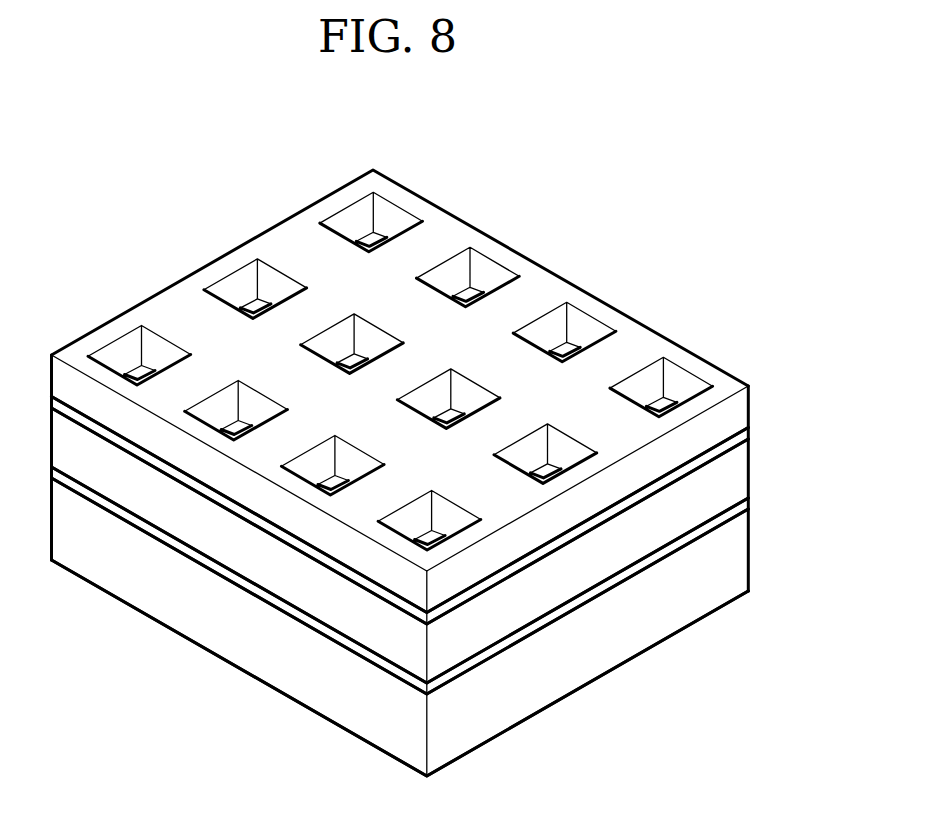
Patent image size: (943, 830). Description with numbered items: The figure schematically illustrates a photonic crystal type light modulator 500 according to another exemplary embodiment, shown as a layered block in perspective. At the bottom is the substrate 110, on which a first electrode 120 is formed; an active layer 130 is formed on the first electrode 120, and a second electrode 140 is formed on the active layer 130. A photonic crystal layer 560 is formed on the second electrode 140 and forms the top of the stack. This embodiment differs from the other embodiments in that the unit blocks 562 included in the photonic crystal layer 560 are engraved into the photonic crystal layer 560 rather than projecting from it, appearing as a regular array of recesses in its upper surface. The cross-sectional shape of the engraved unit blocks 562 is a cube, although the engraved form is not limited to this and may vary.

The photonic crystal type light modulator 500 is at (128, 174).
The photonic crystal layer 560 is at (616, 291).
The unit blocks 562 is at (483, 274).
The second electrode 140 is at (748, 436).
The active layer 130 is at (748, 472).
The first electrode 120 is at (748, 507).
The substrate 110 is at (748, 557).